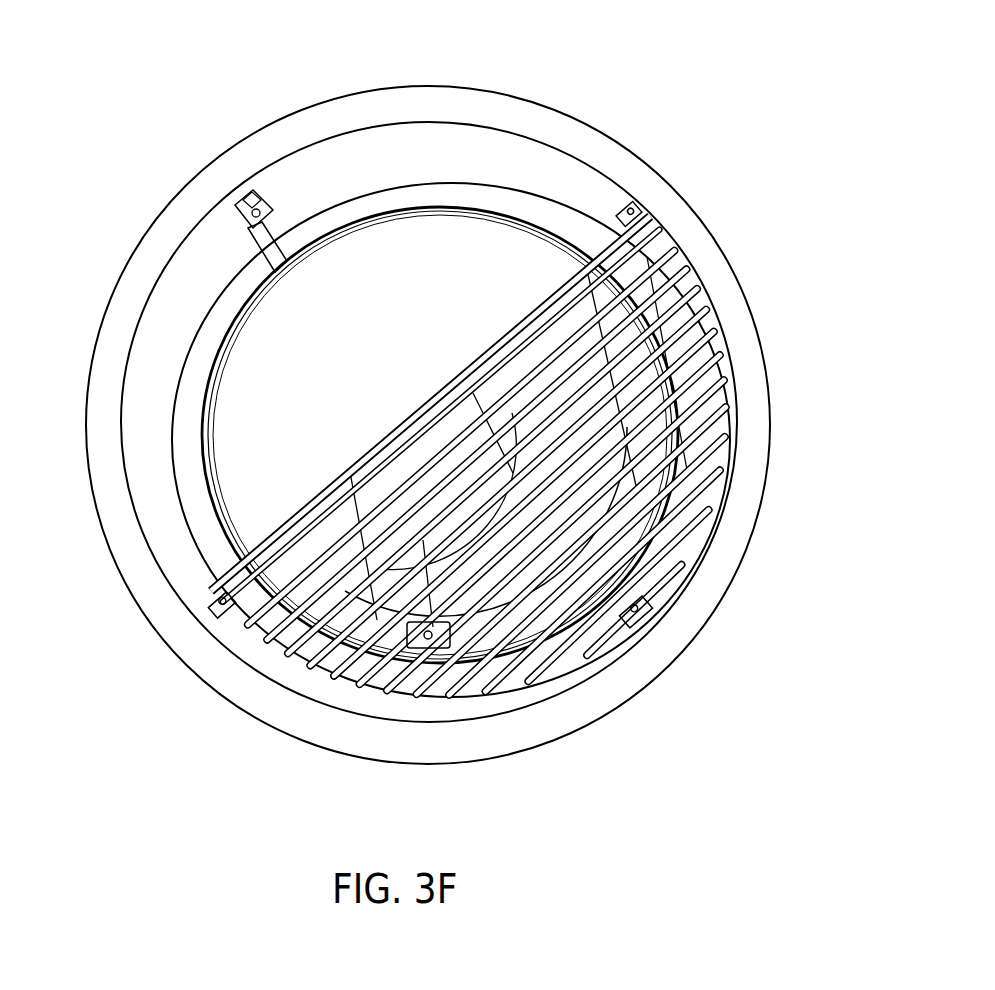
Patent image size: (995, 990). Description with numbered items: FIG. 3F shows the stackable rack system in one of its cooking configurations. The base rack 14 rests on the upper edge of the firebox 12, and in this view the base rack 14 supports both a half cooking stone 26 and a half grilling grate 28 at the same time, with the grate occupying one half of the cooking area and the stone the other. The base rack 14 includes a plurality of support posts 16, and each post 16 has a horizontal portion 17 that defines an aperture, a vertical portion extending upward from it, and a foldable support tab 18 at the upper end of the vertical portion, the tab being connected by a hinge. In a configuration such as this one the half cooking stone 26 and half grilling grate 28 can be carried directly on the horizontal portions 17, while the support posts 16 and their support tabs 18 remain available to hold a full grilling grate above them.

The firebox 12 is at (400, 198).
The base rack 14 is at (195, 448).
The support post 16 is at (233, 222).
The horizontal portion 17 is at (257, 257).
The foldable support tab 18 is at (267, 190).
The half cooking stone 26 is at (468, 250).
The half grilling grate 28 is at (431, 393).